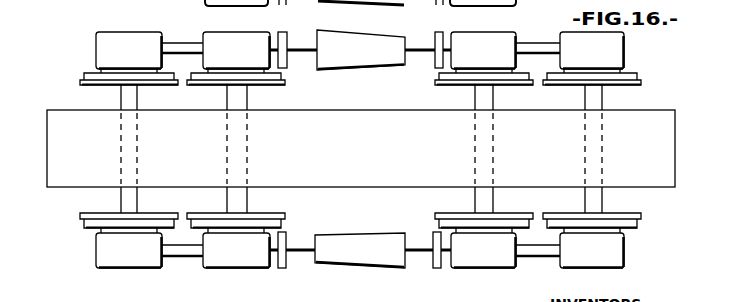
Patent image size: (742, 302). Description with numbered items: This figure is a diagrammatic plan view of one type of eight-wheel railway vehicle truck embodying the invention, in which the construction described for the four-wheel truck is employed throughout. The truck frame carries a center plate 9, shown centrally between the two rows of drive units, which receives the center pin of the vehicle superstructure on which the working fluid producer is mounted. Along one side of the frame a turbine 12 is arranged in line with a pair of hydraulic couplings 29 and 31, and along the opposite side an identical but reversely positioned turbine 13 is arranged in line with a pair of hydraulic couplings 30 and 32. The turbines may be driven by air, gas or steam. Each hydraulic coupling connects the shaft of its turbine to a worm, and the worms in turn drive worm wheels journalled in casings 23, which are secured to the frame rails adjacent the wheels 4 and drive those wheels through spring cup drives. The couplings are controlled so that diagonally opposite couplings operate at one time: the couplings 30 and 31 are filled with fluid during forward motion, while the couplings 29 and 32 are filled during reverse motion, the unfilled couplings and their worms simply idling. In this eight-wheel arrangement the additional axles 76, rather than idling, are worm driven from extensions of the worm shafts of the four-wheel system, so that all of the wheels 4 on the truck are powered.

The wheels 4 is at (266, 86).
The center plate 9 is at (362, 186).
The turbine 12 is at (361, 50).
The turbine 13 is at (360, 250).
The casing 23 is at (360, 150).
The hydraulic coupling 29 is at (437, 40).
The hydraulic coupling 30 is at (433, 240).
The hydraulic coupling 31 is at (287, 40).
The hydraulic coupling 32 is at (287, 242).
The axles 76 is at (602, 96).